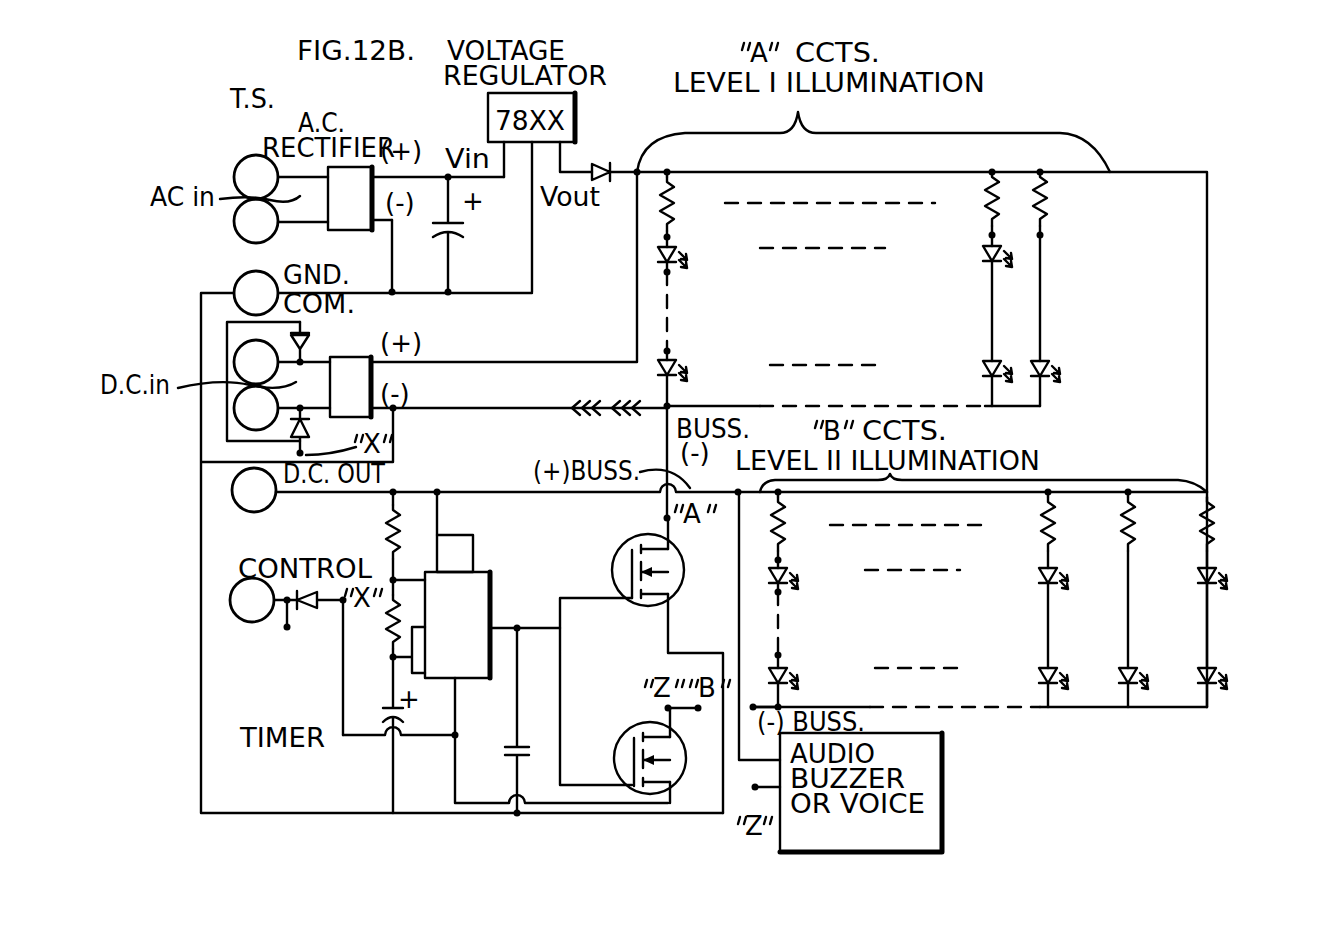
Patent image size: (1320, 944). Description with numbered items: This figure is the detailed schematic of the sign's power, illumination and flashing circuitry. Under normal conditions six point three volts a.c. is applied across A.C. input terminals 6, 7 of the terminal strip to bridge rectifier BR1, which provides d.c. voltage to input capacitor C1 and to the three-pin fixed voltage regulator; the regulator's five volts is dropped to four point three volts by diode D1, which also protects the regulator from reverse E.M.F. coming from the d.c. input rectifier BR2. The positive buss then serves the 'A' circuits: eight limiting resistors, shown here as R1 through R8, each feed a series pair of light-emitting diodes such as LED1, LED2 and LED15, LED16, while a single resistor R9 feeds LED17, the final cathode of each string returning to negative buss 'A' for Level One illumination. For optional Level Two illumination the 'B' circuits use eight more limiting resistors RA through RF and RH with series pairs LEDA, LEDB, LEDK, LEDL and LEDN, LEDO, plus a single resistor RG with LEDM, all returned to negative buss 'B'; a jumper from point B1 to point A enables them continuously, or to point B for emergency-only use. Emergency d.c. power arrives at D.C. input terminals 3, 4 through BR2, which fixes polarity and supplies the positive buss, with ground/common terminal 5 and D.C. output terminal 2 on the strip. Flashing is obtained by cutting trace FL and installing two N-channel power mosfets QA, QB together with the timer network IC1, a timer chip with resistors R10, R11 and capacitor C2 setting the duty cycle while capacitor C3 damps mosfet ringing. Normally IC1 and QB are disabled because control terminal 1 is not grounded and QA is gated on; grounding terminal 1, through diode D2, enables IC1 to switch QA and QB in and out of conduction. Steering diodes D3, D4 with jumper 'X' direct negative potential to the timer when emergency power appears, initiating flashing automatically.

The control terminal 1 is at (263, 600).
The D.C. out terminal 2 is at (254, 490).
The D.C. input terminal 3 is at (256, 408).
The D.C. input terminal 4 is at (256, 362).
The ground terminal 5 is at (256, 293).
The A.C. input terminal 6 is at (256, 221).
The A.C. input terminal 7 is at (256, 177).
The bridge rectifier BR1 is at (350, 198).
The bridge rectifier BR2 is at (350, 387).
The input capacitor C1 is at (431, 234).
The timing capacitor C2 is at (401, 735).
The damping capacitor C3 is at (498, 721).
The diode D1 is at (614, 153).
The diode D2 is at (315, 663).
The steering diode D3 is at (323, 435).
The steering diode D4 is at (323, 344).
The timer IC1 is at (537, 647).
The N channel power mosfet QA is at (631, 665).
The N channel power mosfet QB is at (637, 754).
The limiting resistor R1 is at (689, 205).
The limiting resistor R8 is at (969, 205).
The limiting resistor R9 is at (1059, 205).
The timing resistor R10 is at (373, 538).
The timing resistor R11 is at (378, 634).
The limiting resistor RA is at (796, 528).
The limiting resistor RF is at (1025, 530).
The limiting resistor RG is at (1101, 580).
The limiting resistor RH is at (1181, 532).
The light-emitting diode LED1 is at (703, 255).
The light-emitting diode LED2 is at (703, 377).
The light-emitting diode LED15 is at (951, 298).
The light-emitting diode LED16 is at (952, 378).
The light-emitting diode LED17 is at (1085, 320).
The light-emitting diode LEDA is at (811, 576).
The light-emitting diode LEDB is at (813, 681).
The light-emitting diode LEDK is at (1016, 612).
The light-emitting diode LEDL is at (1016, 680).
The light-emitting diode LEDM is at (1165, 668).
The light-emitting diode LEDN is at (1242, 613).
The light-emitting diode LEDO is at (1242, 681).
The jumper point B1 is at (759, 687).
The flashing trace FL is at (603, 391).